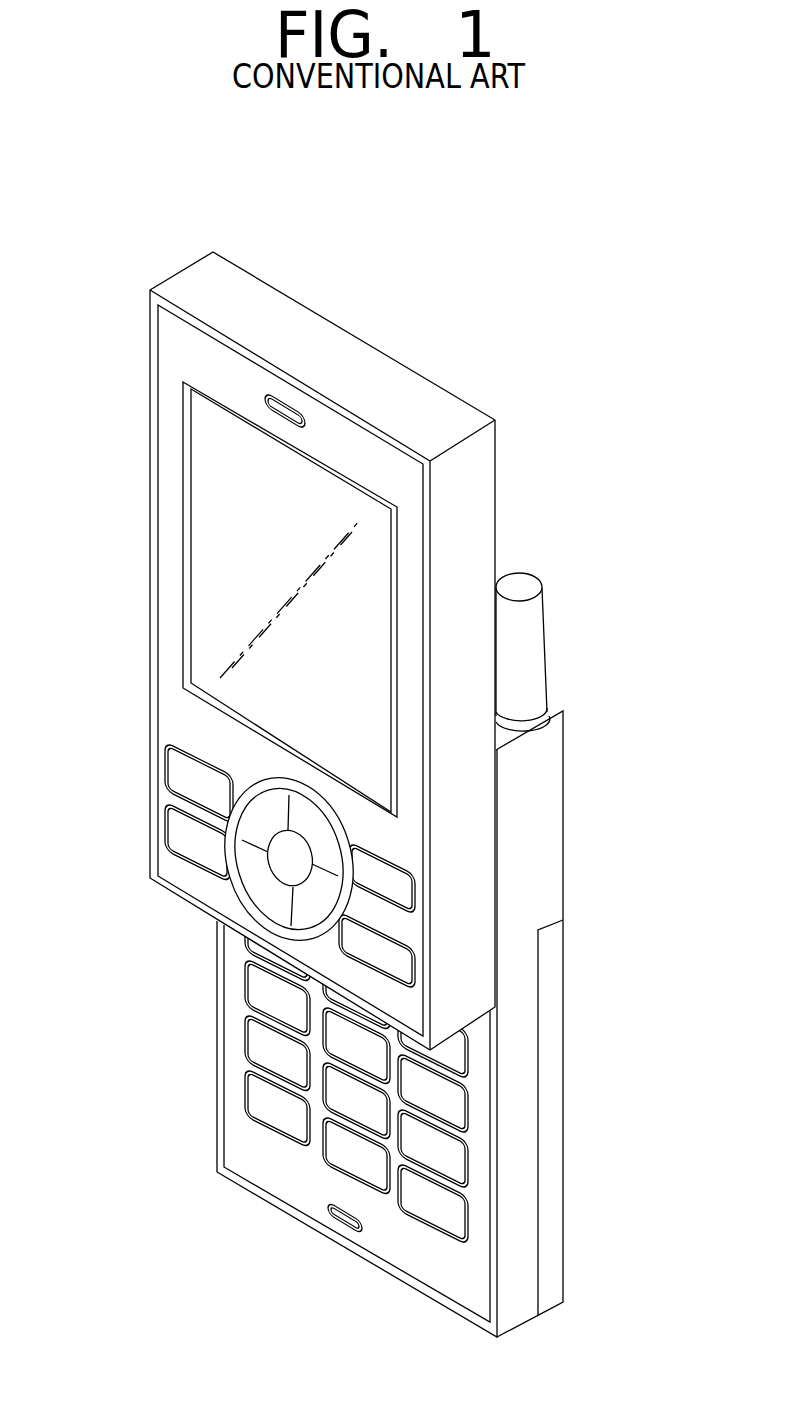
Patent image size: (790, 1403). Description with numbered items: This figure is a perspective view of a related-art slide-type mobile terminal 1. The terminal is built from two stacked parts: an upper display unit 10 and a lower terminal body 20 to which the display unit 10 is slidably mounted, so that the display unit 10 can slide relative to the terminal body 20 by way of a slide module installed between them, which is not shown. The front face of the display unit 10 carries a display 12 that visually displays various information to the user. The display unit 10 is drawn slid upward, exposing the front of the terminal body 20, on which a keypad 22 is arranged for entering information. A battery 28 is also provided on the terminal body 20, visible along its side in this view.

The slide-type mobile terminal 1 is at (530, 306).
The display unit 10 is at (480, 545).
The display 12 is at (212, 493).
The terminal body 20 is at (550, 843).
The keypad 22 is at (260, 1040).
The battery 28 is at (550, 1193).